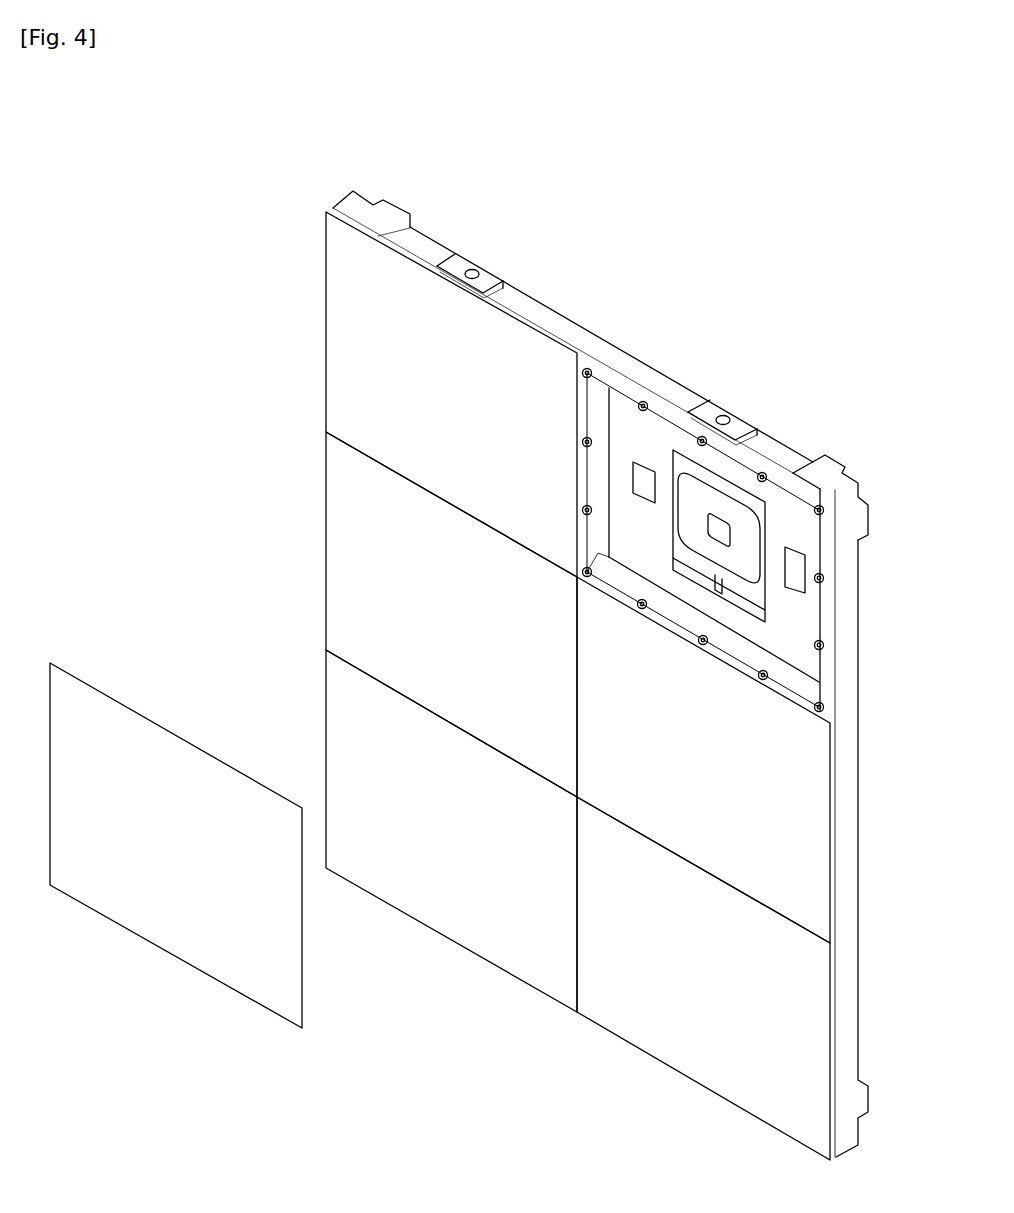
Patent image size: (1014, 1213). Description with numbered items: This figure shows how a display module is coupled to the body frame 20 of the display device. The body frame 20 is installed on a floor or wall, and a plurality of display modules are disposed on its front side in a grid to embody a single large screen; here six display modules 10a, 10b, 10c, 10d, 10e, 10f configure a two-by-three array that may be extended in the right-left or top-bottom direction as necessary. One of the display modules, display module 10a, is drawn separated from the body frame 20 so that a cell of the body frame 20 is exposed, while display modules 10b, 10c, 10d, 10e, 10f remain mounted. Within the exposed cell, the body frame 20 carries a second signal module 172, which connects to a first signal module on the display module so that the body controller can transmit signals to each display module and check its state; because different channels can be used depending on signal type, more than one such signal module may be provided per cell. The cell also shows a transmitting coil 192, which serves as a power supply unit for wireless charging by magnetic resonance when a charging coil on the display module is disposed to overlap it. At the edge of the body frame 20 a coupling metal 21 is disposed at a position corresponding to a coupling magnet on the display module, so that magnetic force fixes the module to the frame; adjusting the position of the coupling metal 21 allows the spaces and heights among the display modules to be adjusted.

The display module 10a is at (176, 845).
The display module 10b is at (703, 760).
The display module 10c is at (703, 978).
The display module 10d is at (451, 394).
The display module 10e is at (451, 614).
The display module 10f is at (451, 831).
The body frame 20 is at (852, 652).
The coupling metal 21 is at (833, 498).
The second signal module 172 is at (641, 462).
The transmitting coil 192 is at (725, 500).